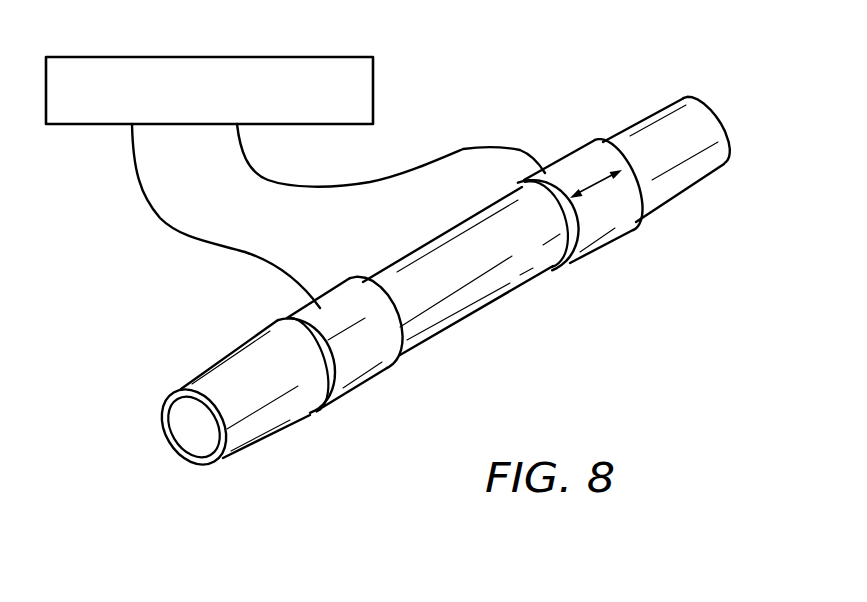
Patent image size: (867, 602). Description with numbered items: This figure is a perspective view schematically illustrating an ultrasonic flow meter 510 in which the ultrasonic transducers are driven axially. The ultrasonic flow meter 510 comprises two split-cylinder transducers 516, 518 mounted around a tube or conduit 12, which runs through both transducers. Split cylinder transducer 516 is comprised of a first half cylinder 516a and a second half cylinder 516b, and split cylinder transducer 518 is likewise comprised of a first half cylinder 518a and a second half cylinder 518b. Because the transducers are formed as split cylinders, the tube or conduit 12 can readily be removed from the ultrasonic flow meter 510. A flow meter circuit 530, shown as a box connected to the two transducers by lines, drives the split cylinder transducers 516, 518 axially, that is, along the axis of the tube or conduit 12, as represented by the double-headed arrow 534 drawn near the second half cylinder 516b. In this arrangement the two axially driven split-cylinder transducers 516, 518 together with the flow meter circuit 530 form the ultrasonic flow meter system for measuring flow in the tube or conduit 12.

The tube or conduit 12 is at (674, 120).
The ultrasonic flow meter 510 is at (445, 255).
The split-cylinder transducer 516 is at (555, 242).
The first half cylinder 516a is at (517, 185).
The second half cylinder 516b is at (618, 222).
The split-cylinder transducer 518 is at (325, 379).
The first half cylinder 518a is at (280, 320).
The second half cylinder 518b is at (376, 358).
The flow meter circuit 530 is at (374, 68).
The arrow 534 is at (596, 190).